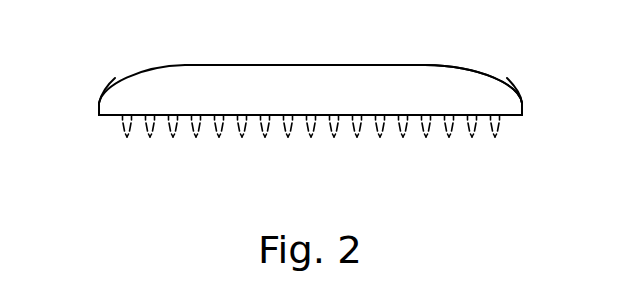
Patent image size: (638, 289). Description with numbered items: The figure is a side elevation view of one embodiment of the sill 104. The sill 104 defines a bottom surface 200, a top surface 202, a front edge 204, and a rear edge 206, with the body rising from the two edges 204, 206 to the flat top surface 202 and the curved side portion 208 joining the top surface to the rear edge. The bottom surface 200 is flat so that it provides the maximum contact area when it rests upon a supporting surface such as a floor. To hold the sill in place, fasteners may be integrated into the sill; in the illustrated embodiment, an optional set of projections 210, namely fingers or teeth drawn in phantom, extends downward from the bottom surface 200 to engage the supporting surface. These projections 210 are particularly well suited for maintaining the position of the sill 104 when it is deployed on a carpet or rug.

The sill 104 is at (160, 70).
The bottom surface 200 is at (113, 118).
The top surface 202 is at (324, 65).
The front edge 204 is at (99, 110).
The rear edge 206 is at (523, 99).
The curved side wall 208 is at (416, 97).
The projections 210 is at (288, 138).